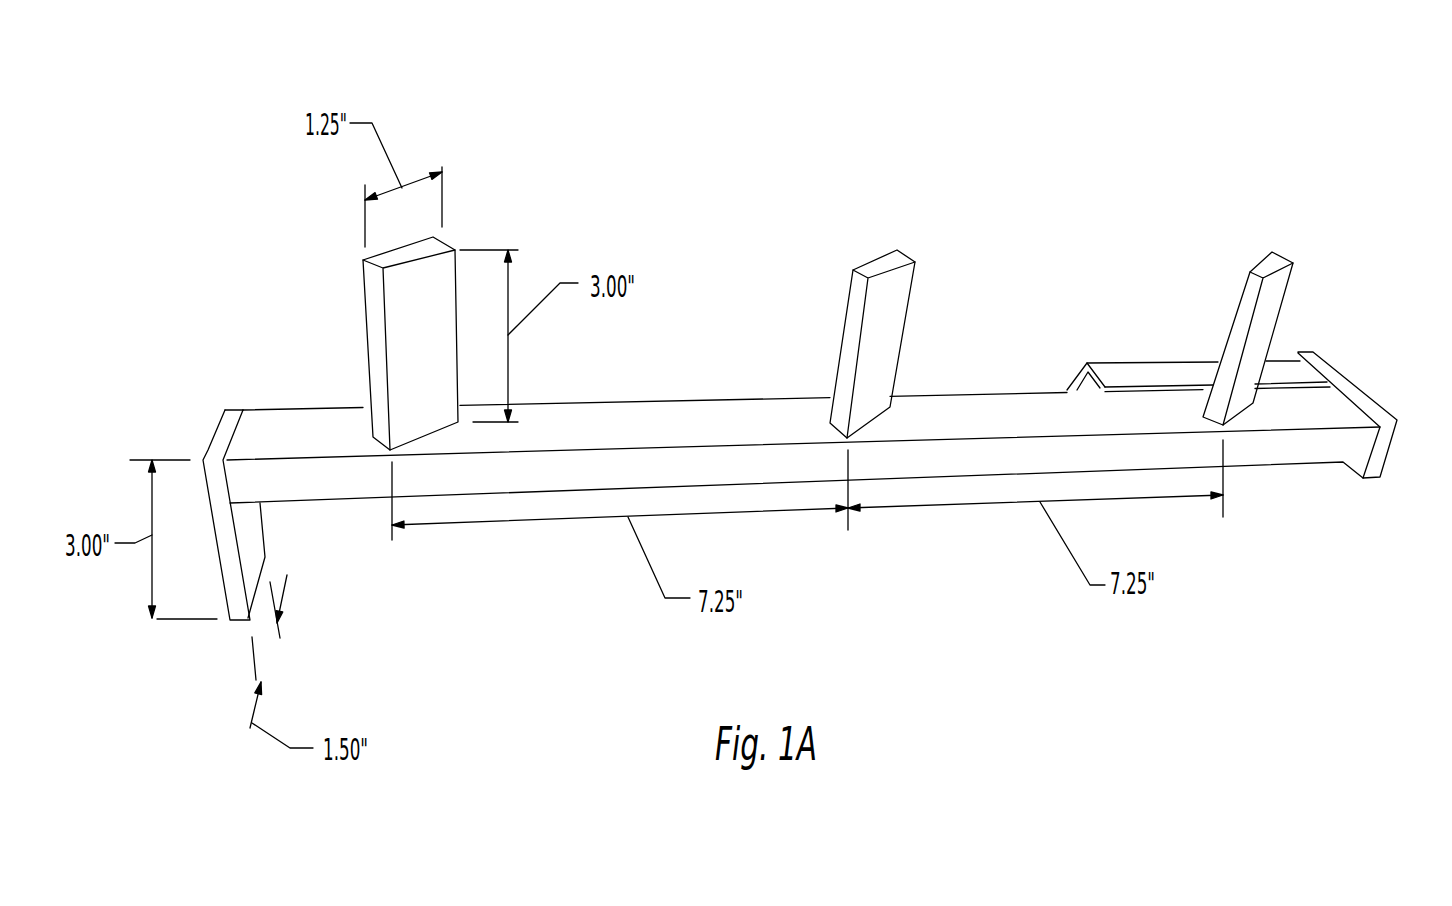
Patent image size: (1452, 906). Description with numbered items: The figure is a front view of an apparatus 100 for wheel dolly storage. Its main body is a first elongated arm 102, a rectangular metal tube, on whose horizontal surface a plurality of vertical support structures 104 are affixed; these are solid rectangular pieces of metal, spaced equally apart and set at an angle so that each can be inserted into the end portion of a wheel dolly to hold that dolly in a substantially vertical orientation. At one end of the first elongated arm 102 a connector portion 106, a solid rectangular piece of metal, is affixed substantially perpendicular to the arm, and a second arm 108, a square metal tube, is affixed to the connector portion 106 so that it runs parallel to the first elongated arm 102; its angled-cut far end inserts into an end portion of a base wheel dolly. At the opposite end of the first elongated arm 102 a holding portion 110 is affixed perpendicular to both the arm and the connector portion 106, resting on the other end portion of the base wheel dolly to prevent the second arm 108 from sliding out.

The apparatus for wheel dolly storage 100 is at (1263, 92).
The first elongated arm 102 is at (283, 408).
The vertical support structures 104 is at (363, 299).
The connector portion 106 is at (1350, 390).
The second arm 108 is at (1153, 362).
The holding portion 110 is at (217, 430).